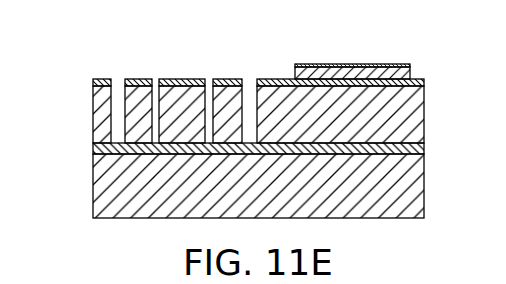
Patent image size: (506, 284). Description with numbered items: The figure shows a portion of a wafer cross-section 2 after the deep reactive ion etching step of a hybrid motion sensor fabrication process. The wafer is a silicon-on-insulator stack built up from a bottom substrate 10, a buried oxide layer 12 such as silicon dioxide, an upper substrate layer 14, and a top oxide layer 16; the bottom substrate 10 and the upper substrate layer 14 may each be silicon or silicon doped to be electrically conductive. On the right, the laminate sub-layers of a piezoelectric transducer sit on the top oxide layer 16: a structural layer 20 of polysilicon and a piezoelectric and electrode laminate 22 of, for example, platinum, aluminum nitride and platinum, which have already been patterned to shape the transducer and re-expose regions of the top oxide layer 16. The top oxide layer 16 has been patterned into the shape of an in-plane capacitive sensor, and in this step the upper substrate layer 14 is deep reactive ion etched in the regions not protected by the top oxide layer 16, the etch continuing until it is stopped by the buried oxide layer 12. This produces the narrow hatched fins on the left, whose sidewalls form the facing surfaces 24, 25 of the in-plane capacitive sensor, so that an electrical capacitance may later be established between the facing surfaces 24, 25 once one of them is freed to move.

The wafer cross-section 2 is at (269, 112).
The bottom substrate 10 is at (424, 203).
The buried oxide layer 12 is at (424, 149).
The upper substrate layer 14 is at (286, 88).
The top oxide layer 16 is at (426, 84).
The structural layer 20 is at (412, 72).
The piezoelectric and electrode laminate 22 is at (387, 53).
The facing surface 24 is at (160, 112).
The facing surface 25 is at (152, 100).